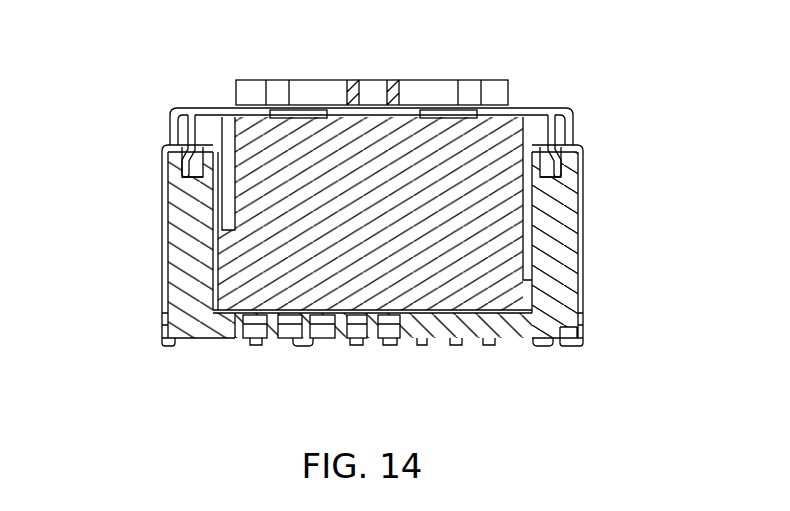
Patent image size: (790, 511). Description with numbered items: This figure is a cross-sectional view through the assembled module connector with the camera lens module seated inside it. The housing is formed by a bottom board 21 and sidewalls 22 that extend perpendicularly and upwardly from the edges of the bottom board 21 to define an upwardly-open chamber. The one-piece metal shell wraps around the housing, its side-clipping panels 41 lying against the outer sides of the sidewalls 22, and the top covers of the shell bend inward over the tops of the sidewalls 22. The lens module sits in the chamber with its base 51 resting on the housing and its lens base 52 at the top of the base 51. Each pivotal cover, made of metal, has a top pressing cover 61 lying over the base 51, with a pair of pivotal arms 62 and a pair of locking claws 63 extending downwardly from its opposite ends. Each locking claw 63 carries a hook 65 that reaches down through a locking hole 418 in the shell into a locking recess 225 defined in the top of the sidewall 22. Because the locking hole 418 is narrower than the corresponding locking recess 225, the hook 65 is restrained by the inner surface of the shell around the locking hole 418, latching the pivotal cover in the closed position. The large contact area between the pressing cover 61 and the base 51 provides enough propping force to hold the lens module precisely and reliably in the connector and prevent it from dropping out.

The bottom board 21 is at (462, 327).
The sidewall 22 is at (190, 221).
The side-clipping panel 41 is at (163, 290).
The base 51 is at (362, 238).
The lens base 52 is at (335, 92).
The top pressing cover 61 is at (272, 107).
The pivotal arm 62 is at (172, 122).
The locking claw 63 is at (186, 107).
The hook 65 is at (163, 145).
The locking recess 225 is at (190, 170).
The locking hole 418 is at (200, 148).